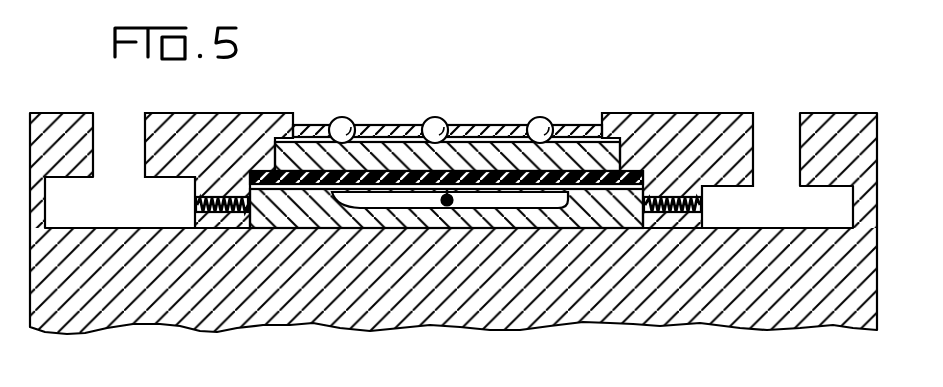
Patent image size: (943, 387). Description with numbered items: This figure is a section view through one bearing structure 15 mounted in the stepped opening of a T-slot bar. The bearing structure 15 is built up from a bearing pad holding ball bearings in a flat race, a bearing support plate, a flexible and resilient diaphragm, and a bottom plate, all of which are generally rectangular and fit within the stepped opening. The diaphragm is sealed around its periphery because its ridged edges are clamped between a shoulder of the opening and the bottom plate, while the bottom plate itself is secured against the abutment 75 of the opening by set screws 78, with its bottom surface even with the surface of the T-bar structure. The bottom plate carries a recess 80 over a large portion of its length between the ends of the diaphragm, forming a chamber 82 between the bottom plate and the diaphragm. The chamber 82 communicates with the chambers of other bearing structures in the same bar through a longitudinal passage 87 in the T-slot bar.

The bearing structure 15 is at (477, 125).
The abutment 75 is at (253, 219).
The set screws 78 is at (197, 205).
The recess 80 is at (360, 209).
The chamber 82 is at (500, 200).
The longitudinal passage 87 is at (450, 205).